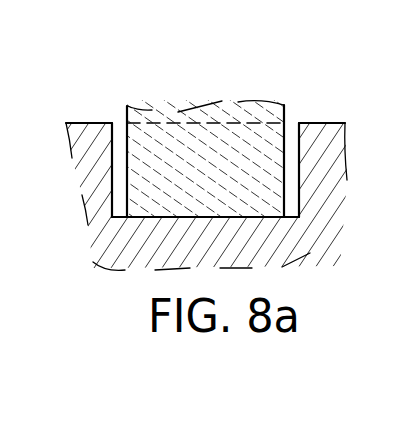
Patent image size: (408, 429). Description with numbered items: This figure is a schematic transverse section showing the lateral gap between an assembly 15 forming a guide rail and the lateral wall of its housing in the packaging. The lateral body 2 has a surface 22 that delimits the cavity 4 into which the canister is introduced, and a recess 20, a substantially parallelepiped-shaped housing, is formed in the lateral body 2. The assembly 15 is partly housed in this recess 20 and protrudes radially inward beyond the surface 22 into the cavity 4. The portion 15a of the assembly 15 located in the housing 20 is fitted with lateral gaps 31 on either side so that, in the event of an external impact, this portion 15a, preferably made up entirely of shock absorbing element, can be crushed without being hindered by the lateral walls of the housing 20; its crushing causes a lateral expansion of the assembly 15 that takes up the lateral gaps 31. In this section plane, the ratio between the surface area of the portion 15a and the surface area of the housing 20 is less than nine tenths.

The lateral body 2 is at (328, 222).
The cavity 4 is at (115, 105).
The assembly forming a guide rail 15 is at (284, 104).
The portion of the assembly located in the housing 15a is at (162, 190).
The recess 20 is at (240, 217).
The surface of the lateral body 22 is at (87, 123).
The lateral gap 31 is at (117, 160).